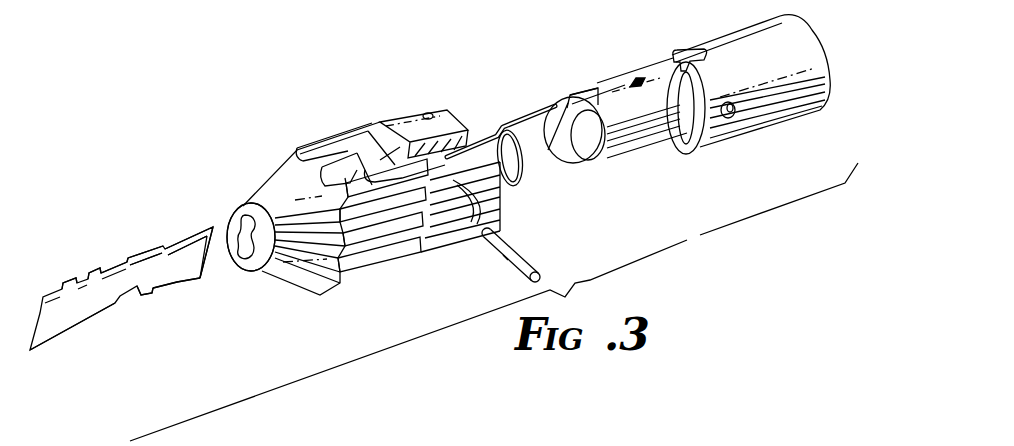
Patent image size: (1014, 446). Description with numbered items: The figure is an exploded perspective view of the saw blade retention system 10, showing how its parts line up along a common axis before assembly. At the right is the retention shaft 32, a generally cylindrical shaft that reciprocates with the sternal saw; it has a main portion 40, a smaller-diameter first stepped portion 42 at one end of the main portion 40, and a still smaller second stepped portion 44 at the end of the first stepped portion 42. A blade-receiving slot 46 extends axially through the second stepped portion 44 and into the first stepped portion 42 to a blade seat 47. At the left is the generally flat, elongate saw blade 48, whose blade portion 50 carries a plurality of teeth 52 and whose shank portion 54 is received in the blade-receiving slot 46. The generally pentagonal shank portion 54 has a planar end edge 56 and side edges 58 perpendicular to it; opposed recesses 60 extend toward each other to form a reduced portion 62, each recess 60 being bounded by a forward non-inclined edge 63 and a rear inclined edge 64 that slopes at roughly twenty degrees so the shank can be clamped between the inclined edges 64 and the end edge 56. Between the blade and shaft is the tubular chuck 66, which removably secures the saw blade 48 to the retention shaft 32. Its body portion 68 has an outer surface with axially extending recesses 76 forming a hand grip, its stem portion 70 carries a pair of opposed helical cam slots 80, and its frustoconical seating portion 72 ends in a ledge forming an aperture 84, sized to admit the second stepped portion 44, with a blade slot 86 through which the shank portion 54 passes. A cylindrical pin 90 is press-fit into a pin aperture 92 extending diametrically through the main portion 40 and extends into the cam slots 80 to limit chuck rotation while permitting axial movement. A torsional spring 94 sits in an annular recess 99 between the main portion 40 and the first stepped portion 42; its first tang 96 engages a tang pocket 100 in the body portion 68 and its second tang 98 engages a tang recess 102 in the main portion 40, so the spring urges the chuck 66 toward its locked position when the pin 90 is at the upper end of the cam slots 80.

The saw blade retention system 10 is at (332, 110).
The retention shaft 32 is at (826, 22).
The main portion 40 is at (776, 108).
The first stepped portion 42 is at (646, 140).
The second stepped portion 44 is at (574, 160).
The blade-receiving slot 46 is at (600, 103).
The blade seat 47 is at (635, 82).
The saw blade 48 is at (66, 350).
The blade portion 50 is at (97, 313).
The teeth 52 is at (90, 274).
The shank portion 54 is at (177, 283).
The end edge 56 is at (211, 273).
The side edges 58 is at (188, 236).
The recesses 60 is at (128, 258).
The reduced portion 62 is at (140, 295).
The non-inclined edge 63 is at (125, 262).
The inclined edges 64 is at (152, 257).
The chuck 66 is at (400, 282).
The body portion 68 is at (357, 268).
The stem portion 70 is at (437, 238).
The seating portion 72 is at (280, 178).
The recesses 76 is at (340, 178).
The cam slots 80 is at (430, 112).
The aperture 84 is at (253, 247).
The blade slot 86 is at (245, 210).
The pin 90 is at (540, 261).
The pin aperture 92 is at (729, 118).
The spring 94 is at (522, 178).
The first tang 96 is at (482, 137).
The second tang 98 is at (540, 117).
The annular recess 99 is at (687, 135).
The tang pocket 100 is at (410, 140).
The tang recess 102 is at (692, 50).